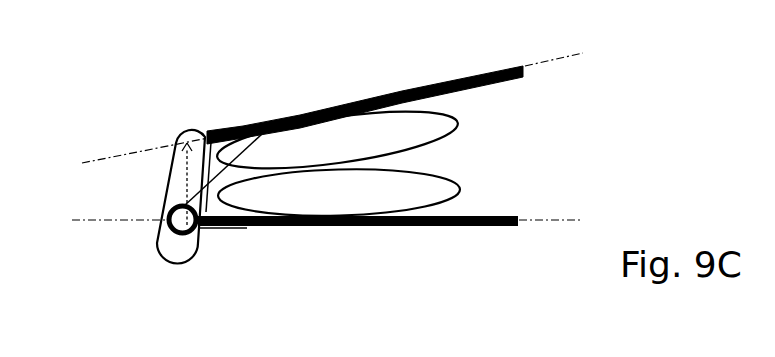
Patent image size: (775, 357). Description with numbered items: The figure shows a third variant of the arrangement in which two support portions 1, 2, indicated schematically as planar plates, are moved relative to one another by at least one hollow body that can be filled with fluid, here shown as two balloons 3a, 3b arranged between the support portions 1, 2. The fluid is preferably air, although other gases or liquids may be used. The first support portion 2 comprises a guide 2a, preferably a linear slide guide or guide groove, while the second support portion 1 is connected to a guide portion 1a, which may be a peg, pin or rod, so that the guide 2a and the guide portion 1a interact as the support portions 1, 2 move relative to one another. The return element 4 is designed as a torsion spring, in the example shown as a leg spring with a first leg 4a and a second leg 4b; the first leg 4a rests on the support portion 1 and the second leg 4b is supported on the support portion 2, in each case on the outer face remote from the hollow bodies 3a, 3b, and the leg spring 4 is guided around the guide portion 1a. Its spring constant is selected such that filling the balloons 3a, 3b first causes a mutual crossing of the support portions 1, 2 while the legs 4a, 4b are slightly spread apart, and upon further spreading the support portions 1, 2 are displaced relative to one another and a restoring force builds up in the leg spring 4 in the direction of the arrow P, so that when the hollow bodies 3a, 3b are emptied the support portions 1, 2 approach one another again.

The second support portion 1 is at (410, 227).
The guide portion 1a is at (197, 241).
The first support portion 2 is at (402, 90).
The guide 2a is at (172, 160).
The balloon 3a is at (457, 124).
The balloon 3b is at (460, 192).
The return element 4 is at (205, 133).
The first leg 4a is at (238, 227).
The second leg 4b is at (248, 155).